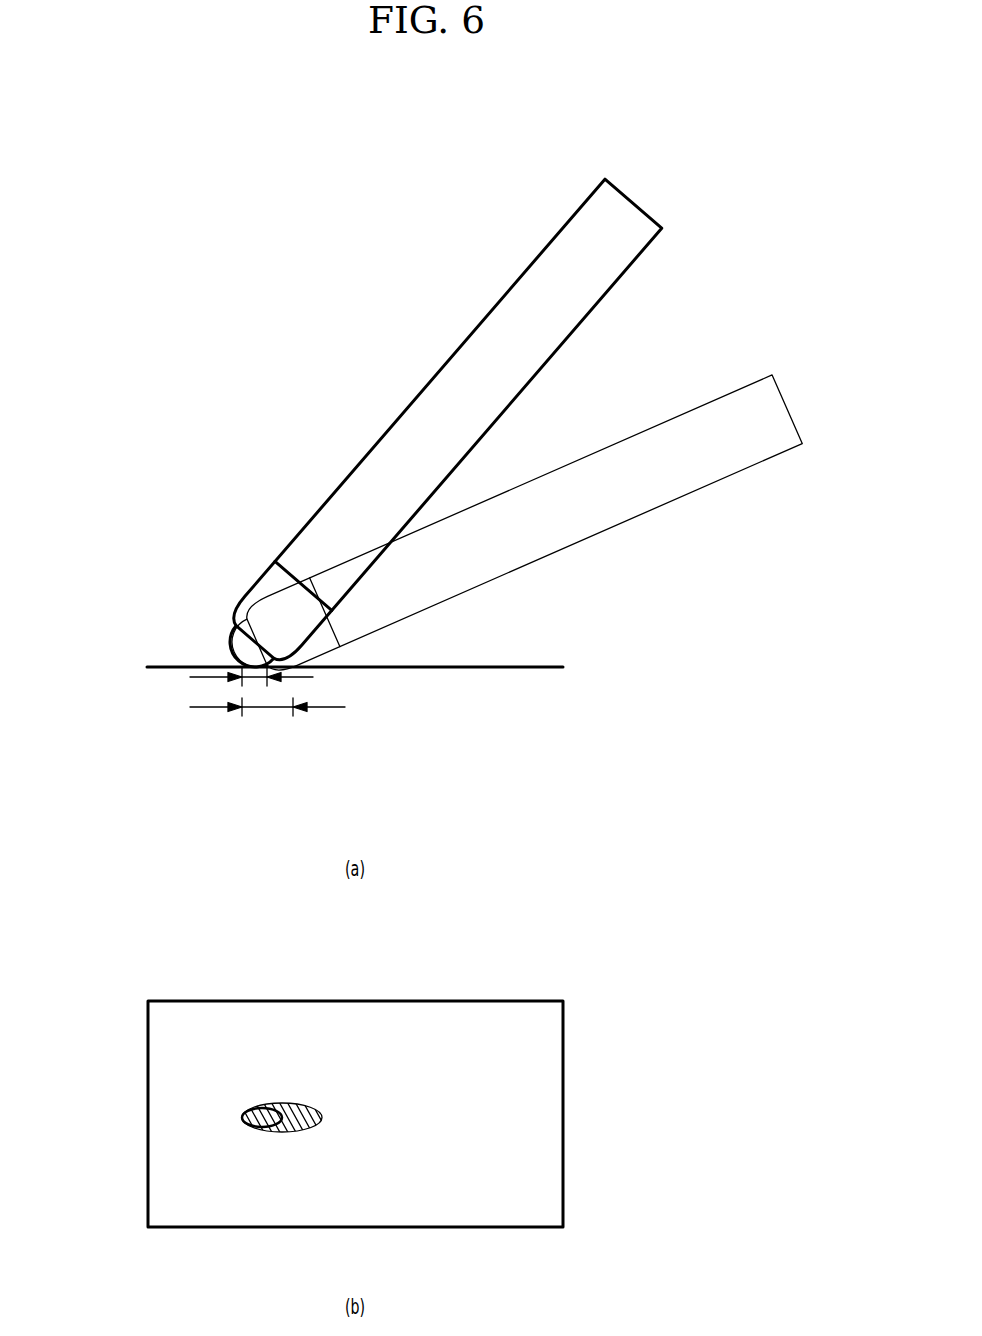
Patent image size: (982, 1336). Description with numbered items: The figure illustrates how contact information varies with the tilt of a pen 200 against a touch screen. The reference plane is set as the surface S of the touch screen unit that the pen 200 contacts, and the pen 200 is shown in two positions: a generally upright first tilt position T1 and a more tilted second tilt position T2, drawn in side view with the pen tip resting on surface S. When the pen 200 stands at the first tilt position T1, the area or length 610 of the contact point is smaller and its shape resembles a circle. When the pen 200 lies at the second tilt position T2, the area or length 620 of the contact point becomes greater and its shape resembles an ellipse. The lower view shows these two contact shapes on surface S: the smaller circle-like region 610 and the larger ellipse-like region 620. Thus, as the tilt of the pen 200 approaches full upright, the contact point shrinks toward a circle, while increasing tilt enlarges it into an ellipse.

The pen 200 is at (547, 345).
The first tilt position T1 is at (675, 193).
The second tilt position T2 is at (802, 400).
The surface S is at (508, 666).
The area or length of a contact point 610 is at (198, 677).
The area or length of a contact point 620 is at (333, 707).